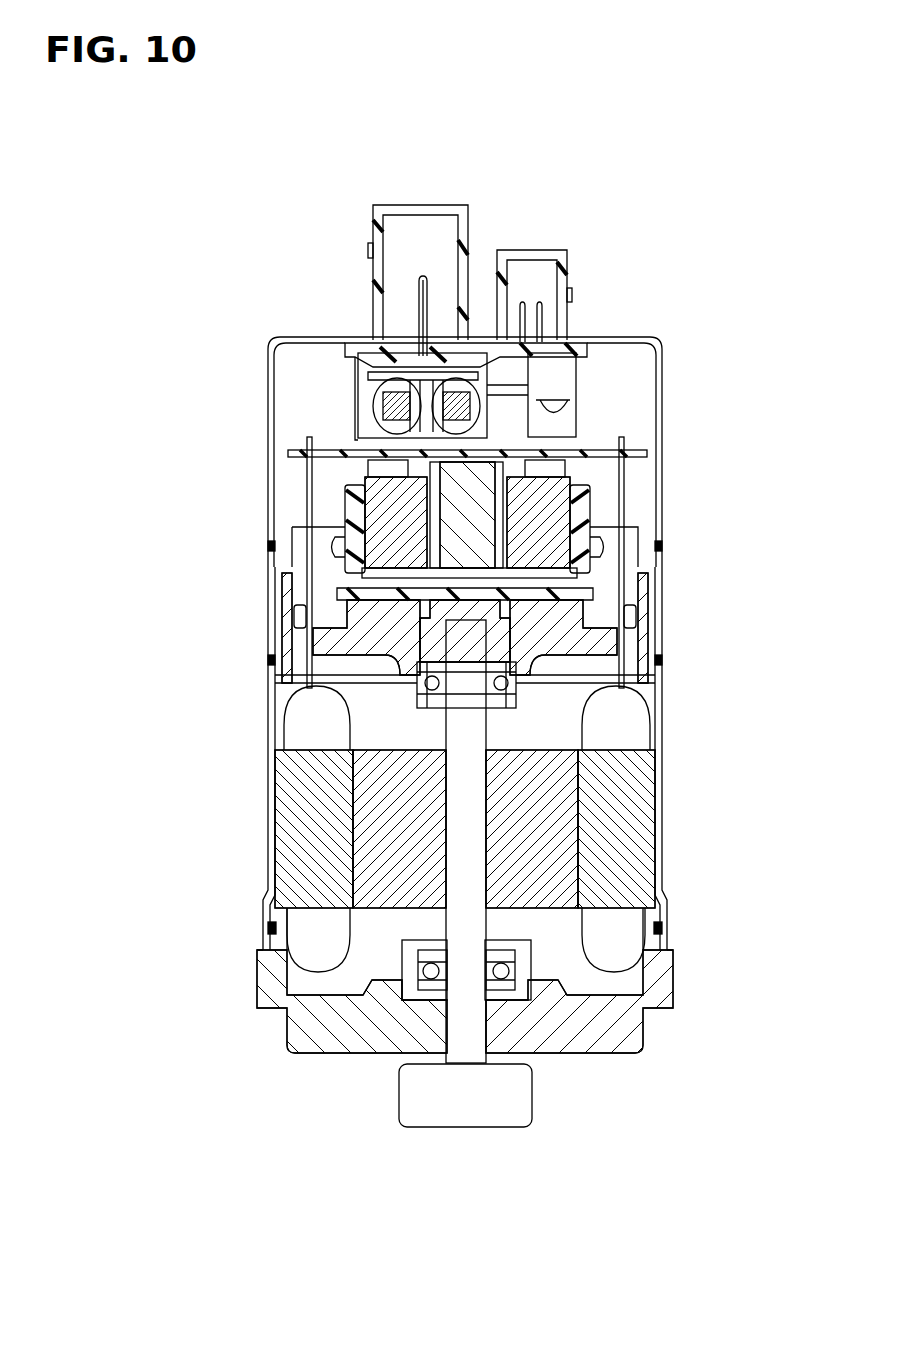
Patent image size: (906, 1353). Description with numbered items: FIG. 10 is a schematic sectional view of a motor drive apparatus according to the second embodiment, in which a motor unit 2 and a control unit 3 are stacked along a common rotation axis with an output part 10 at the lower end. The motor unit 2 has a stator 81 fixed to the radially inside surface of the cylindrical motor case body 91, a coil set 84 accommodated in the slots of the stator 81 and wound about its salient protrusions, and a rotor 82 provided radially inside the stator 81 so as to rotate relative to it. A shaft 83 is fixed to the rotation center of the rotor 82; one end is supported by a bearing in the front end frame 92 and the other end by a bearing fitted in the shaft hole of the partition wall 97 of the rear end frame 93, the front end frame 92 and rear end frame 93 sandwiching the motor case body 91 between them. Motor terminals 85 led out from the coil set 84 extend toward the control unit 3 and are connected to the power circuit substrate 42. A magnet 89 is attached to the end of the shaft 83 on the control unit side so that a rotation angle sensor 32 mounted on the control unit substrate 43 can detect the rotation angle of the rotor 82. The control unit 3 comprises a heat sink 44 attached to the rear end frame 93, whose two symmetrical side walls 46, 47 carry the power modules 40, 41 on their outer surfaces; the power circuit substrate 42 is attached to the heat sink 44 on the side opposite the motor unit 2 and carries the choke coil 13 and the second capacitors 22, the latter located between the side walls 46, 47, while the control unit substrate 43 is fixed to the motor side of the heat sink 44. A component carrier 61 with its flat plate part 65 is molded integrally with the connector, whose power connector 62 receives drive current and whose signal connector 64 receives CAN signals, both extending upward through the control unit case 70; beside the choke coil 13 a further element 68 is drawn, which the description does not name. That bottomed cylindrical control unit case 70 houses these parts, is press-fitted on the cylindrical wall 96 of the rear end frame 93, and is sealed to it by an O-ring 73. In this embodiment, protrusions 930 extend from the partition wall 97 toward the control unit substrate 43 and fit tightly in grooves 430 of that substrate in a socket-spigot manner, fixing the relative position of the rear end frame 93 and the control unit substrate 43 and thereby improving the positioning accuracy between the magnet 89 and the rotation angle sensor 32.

The motor unit 2 is at (185, 772).
The control unit 3 is at (215, 268).
The output part 10 is at (463, 1108).
The choke coil 13 is at (365, 388).
The second capacitors 22 is at (560, 470).
The rotation angle sensor 32 is at (380, 698).
The power module 40 is at (365, 515).
The power module 41 is at (575, 505).
The power circuit substrate 42 is at (600, 452).
The control unit substrate 43 is at (345, 565).
The heat sink 44 is at (345, 530).
The side wall 46 is at (345, 495).
The side wall 47 is at (590, 495).
The component carrier 61 is at (373, 347).
The power connector 62 is at (373, 232).
The signal connector 64 is at (567, 258).
The flat plate part 65 is at (373, 347).
The wire holder 68 is at (580, 410).
The control unit case 70 is at (300, 337).
The O-ring 73 is at (660, 545).
The stator 81 is at (635, 808).
The rotor 82 is at (385, 843).
The shaft 83 is at (385, 770).
The coil set 84 is at (315, 945).
The motor terminals 85 is at (540, 680).
The magnet 89 is at (620, 700).
The motor case body 91 is at (662, 868).
The front end frame 92 is at (665, 985).
The rear end frame 93 is at (305, 638).
The cylindrical wall 96 is at (655, 572).
The partition wall 97 is at (340, 680).
The grooves 430 is at (330, 618).
The protrusions 930 is at (335, 590).